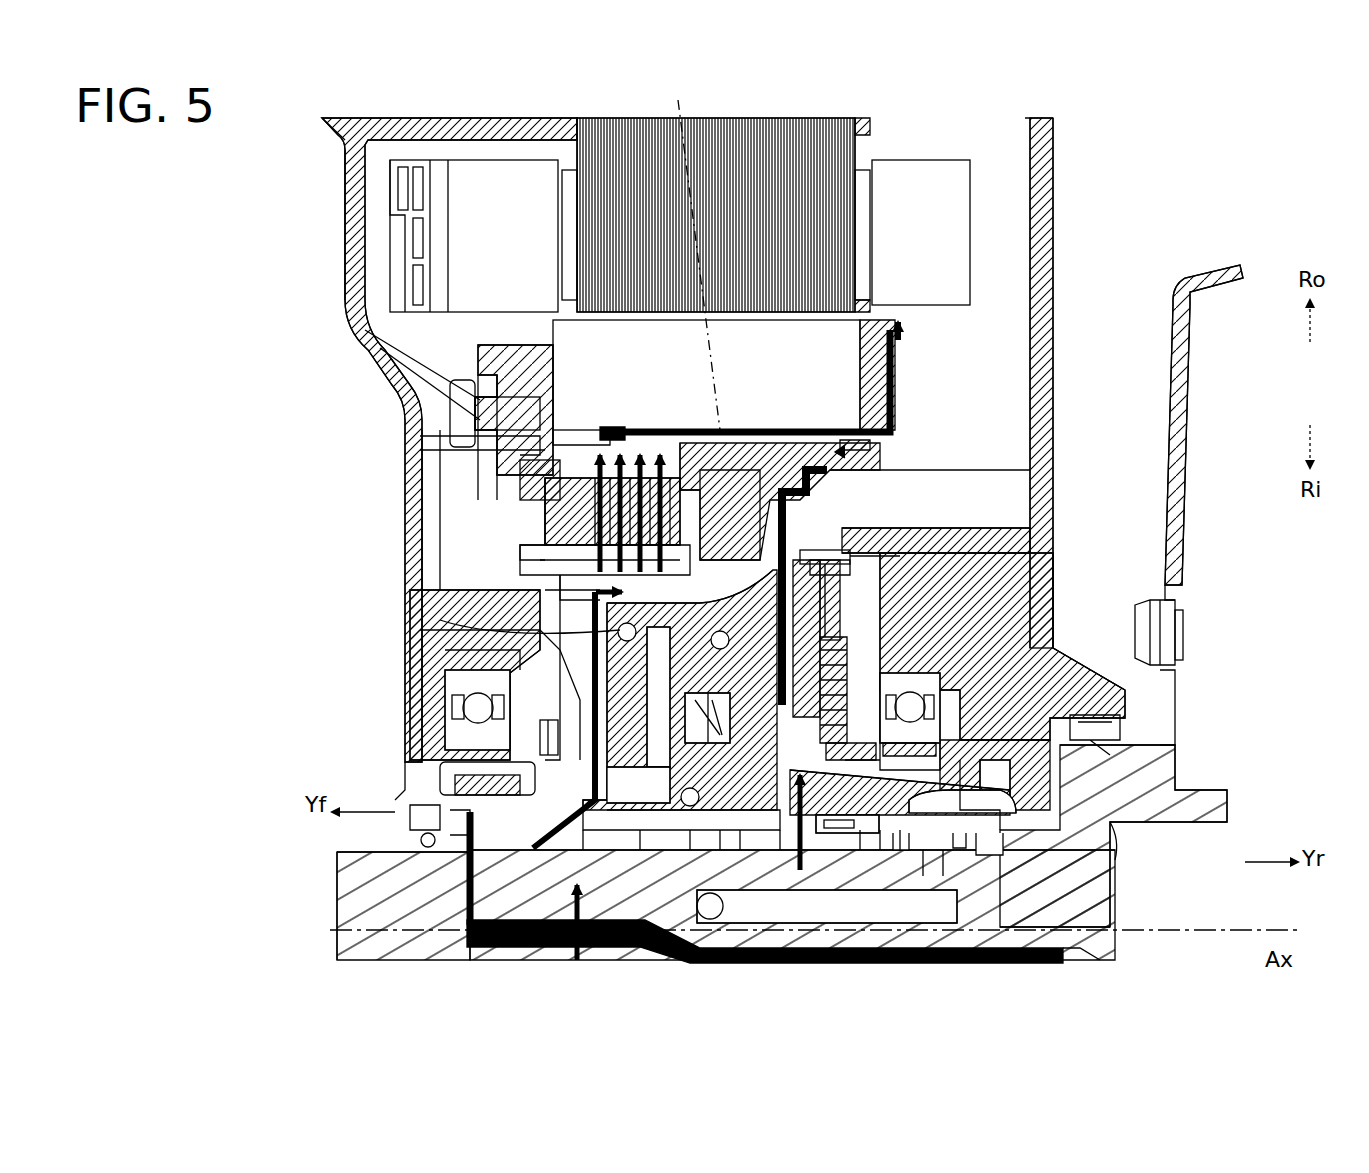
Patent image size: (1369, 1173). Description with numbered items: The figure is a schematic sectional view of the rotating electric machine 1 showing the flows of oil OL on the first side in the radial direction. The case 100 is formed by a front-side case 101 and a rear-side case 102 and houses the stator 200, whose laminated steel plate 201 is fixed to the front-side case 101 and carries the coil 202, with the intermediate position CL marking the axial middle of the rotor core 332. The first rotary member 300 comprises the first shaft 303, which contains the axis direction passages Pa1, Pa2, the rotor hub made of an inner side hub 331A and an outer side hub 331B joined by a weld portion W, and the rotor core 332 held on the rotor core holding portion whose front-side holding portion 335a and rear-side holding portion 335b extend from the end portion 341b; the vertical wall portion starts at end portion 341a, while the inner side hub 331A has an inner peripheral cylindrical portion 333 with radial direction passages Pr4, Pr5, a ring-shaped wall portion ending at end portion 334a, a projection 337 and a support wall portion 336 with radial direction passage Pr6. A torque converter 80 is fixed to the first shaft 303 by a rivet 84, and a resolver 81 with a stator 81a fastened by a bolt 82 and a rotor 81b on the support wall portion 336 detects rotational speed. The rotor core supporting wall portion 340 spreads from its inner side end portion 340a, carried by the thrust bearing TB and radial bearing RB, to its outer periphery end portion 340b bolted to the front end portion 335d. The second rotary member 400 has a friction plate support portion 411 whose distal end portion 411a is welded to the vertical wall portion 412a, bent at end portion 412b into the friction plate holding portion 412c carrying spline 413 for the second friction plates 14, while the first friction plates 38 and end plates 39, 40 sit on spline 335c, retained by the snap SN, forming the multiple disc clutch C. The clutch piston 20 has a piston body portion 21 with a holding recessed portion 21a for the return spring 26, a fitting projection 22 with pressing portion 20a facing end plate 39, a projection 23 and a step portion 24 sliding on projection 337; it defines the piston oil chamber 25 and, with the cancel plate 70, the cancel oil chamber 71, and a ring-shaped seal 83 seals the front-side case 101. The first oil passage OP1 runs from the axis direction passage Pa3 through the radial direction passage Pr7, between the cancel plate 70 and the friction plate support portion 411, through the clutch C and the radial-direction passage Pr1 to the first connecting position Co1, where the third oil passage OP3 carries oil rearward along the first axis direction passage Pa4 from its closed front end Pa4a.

The rotating electric machine 1 is at (310, 157).
The case 100 is at (1058, 195).
The front-side case 101 is at (358, 282).
The rear-side case 102 is at (1180, 531).
The torque converter 80 is at (1228, 266).
The stator 200 is at (792, 116).
The laminated steel plate 201 is at (728, 128).
The coil 202 is at (928, 158).
The intermediate position CL is at (691, 252).
The first rotary member 300 is at (905, 382).
The end portion 341b is at (760, 440).
The rear-side holding portion 335b is at (880, 425).
The rotor core 332 is at (905, 335).
The outer side hub 331B is at (900, 440).
The third oil passage OP3 is at (835, 425).
The first axis direction passage Pa4 is at (778, 440).
The fitting projection 22 is at (735, 440).
The end plate 39 is at (705, 440).
The multiple disc clutch C is at (650, 470).
The first connecting position Co1 is at (596, 440).
The first friction plates 38 is at (608, 440).
The radial-direction passage Pr1 is at (630, 470).
The front end Pa4a is at (420, 410).
The bolt 82 is at (455, 393).
The front end portion 335d is at (370, 330).
The outer periphery end portion 340b is at (395, 362).
The front-side holding portion 335a is at (480, 437).
The spline 335c is at (505, 450).
The snap SN is at (500, 470).
The rotor core supporting wall portion 340 is at (455, 500).
The end plate 40 is at (495, 508).
The spline 413 is at (560, 545).
The second friction plates 14 is at (560, 556).
The end portion 412b is at (600, 582).
The friction plate holding portion 412c is at (600, 592).
The projection 23 is at (590, 604).
The piston body portion 21 is at (600, 608).
The first oil passage OP1 is at (600, 623).
The vertical wall portion 412a is at (560, 640).
The second rotary member 400 is at (540, 650).
The weld portion W is at (470, 652).
The distal end portion 411a is at (470, 670).
The radial bearing RB is at (470, 692).
The friction plate support portion 411 is at (465, 705).
The thrust bearing TB is at (480, 725).
The inner side end portion 340a is at (445, 755).
The cancel plate 70 is at (470, 752).
The cancel oil chamber 71 is at (520, 780).
The ring-shaped seal 83 is at (440, 815).
The inner peripheral cylindrical portion 333 is at (400, 852).
The radial direction passage Pr7 is at (560, 908).
The radial direction passage Pr4 is at (440, 935).
The axis direction passage Pa3 is at (345, 960).
The clutch piston 20 is at (835, 500).
The pressing portion 20a is at (880, 500).
The end portion 341a is at (900, 480).
The end portion 334a is at (860, 520).
The projection 337 is at (1053, 560).
The stator 81a is at (1053, 578).
The inner side hub 331A is at (1165, 580).
The resolver 81 is at (1050, 625).
The step portion 24 is at (1040, 632).
The return spring 26 is at (1060, 650).
The rivet 84 is at (1180, 650).
The rotor 81b is at (1180, 668).
The support wall portion 336 is at (1140, 738).
The radial direction passage Pr6 is at (1120, 746).
The holding recessed portion 21a is at (1130, 795).
The piston oil chamber 25 is at (1110, 852).
The radial direction passage Pr5 is at (1090, 870).
The axis direction passage Pa2 is at (1080, 890).
The first shaft 303 is at (1110, 920).
The oil OL is at (1110, 930).
The axis direction passage Pa1 is at (1100, 950).